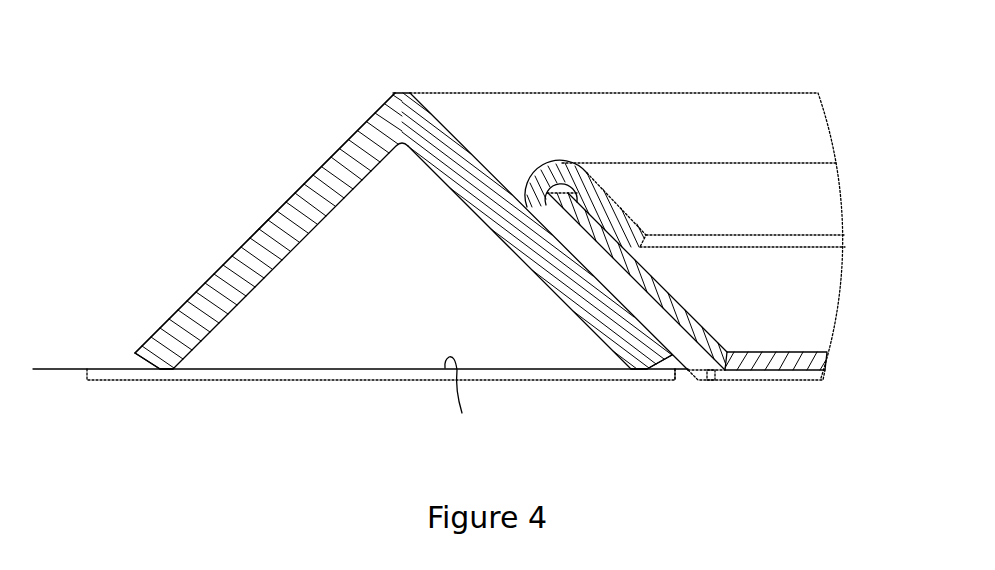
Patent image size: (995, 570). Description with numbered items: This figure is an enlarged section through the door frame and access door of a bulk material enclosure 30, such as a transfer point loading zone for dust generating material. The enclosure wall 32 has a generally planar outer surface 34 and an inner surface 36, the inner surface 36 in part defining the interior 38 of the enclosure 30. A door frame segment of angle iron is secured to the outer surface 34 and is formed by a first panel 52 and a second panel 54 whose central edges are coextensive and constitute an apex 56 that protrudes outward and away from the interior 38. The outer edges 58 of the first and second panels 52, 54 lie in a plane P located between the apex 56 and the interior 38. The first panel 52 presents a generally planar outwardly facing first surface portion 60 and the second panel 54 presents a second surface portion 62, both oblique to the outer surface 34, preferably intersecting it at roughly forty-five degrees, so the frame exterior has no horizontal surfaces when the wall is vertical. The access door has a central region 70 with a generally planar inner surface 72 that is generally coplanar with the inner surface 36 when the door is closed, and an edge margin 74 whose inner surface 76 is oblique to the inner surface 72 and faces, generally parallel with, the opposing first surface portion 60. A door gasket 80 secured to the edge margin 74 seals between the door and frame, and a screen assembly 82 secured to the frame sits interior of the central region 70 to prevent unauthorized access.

The plane P is at (65, 368).
The enclosure 30 is at (257, 380).
The wall 32 is at (338, 334).
The outer surface 34 is at (460, 399).
The inner surface 36 is at (535, 380).
The interior 38 is at (378, 457).
The first panel 52 is at (515, 235).
The second panel 54 is at (297, 217).
The apex 56 is at (408, 92).
The outer edges 58 is at (157, 370).
The first surface portion 60 is at (480, 158).
The second surface portion 62 is at (307, 180).
The central region 70 is at (773, 363).
The inner surface 72 is at (627, 235).
The edge margin 74 is at (648, 285).
The inner surface 76 is at (688, 318).
The door gasket 80 is at (552, 168).
The screen assembly 82 is at (722, 380).